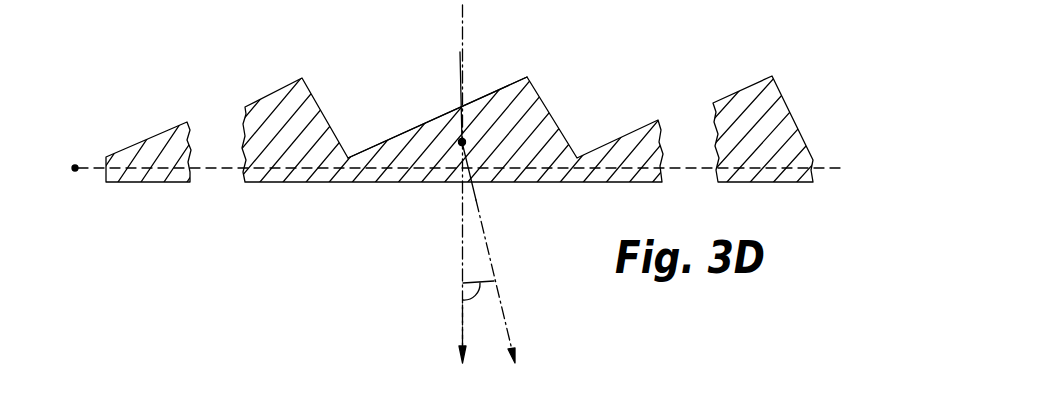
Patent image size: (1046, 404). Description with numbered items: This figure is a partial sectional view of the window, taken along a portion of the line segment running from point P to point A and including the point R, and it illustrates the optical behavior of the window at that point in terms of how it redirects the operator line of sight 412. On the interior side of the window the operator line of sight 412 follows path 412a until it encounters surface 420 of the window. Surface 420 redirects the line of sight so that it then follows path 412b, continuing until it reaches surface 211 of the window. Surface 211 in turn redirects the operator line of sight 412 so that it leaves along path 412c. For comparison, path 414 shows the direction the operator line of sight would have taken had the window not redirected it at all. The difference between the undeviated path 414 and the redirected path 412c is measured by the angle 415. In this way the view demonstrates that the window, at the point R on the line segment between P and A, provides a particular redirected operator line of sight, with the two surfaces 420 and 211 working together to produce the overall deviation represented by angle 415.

The surface 211 is at (275, 182).
The surface 420 is at (393, 137).
The operator line of sight 412 is at (450, 31).
The path 412a is at (462, 60).
The path 412b is at (465, 142).
The path 412c is at (500, 290).
The path 414 is at (463, 331).
The angle 415 is at (463, 300).
The point R is at (460, 144).
The point P is at (73, 168).
The point A is at (478, 169).